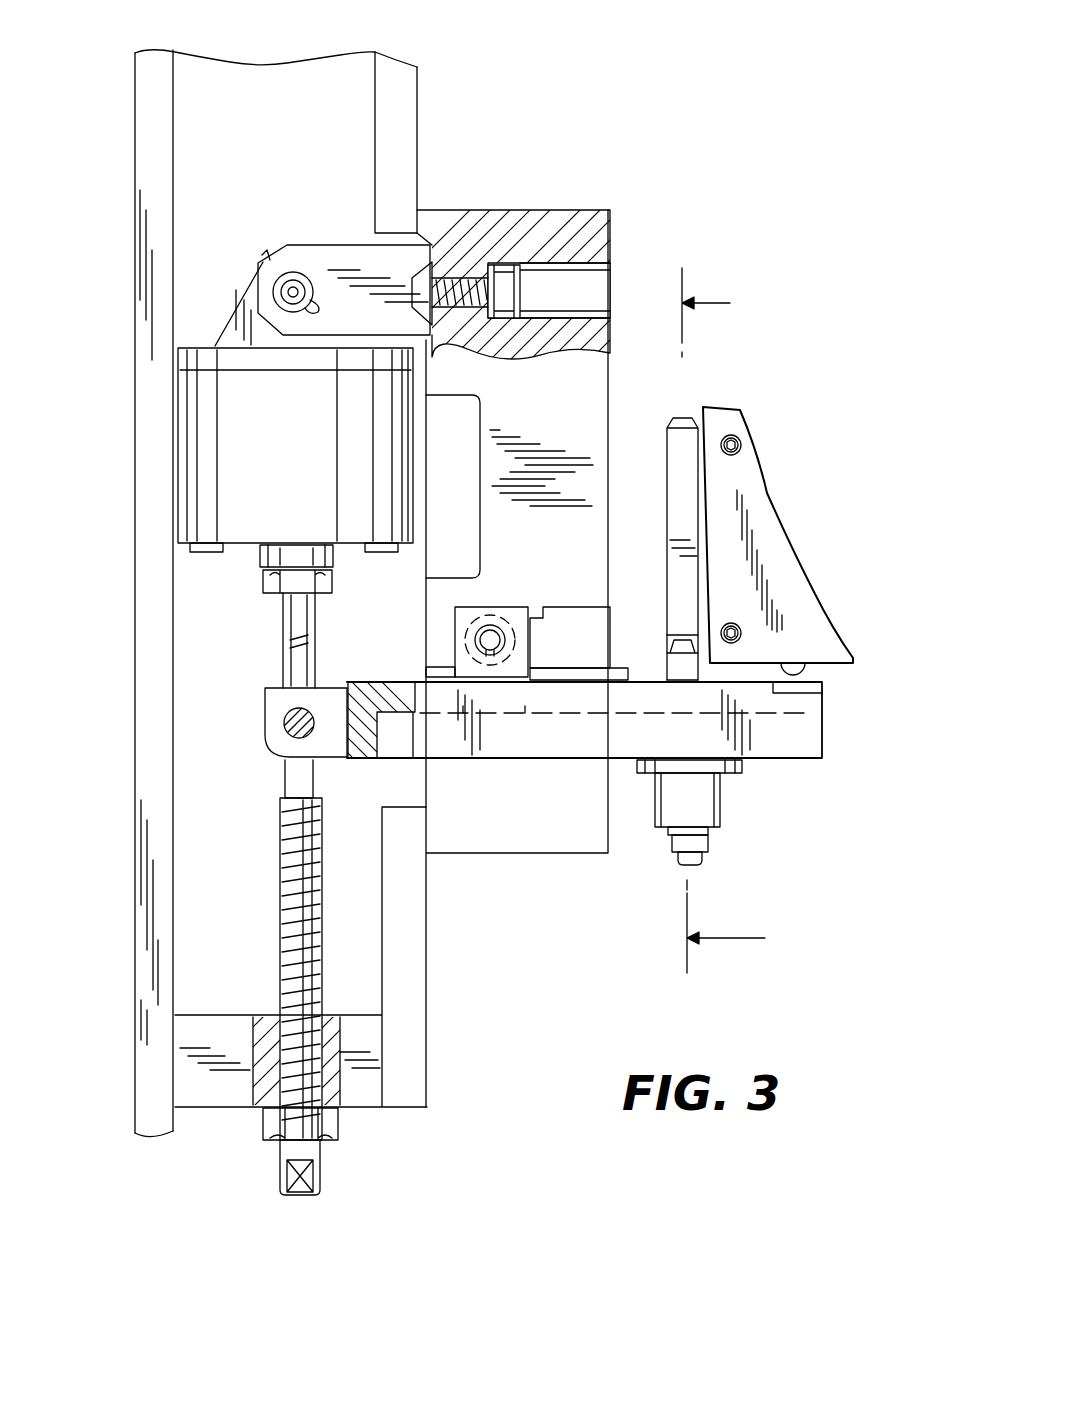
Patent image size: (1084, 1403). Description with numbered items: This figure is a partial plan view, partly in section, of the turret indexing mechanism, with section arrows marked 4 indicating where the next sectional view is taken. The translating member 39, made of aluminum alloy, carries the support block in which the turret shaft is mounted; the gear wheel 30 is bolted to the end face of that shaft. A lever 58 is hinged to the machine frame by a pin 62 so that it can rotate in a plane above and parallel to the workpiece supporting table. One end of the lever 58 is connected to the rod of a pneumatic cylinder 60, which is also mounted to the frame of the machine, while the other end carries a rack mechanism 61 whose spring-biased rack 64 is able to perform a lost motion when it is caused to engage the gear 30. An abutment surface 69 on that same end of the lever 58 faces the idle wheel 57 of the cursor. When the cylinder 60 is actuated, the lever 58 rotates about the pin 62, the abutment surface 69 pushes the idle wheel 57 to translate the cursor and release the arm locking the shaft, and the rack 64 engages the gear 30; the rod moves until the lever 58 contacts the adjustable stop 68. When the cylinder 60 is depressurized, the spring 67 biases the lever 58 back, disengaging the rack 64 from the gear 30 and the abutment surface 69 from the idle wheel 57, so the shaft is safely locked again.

The gear wheel 30 is at (672, 460).
The translating member 39 is at (777, 538).
The idle wheel 57 is at (800, 667).
The lever 58 is at (787, 750).
The pneumatic cylinder 60 is at (243, 545).
The rack mechanism 61 is at (714, 852).
The pin 62 is at (490, 637).
The rack 64 is at (677, 667).
The spring 67 is at (545, 668).
The adjustable stop 68 is at (283, 962).
The abutment surface 69 is at (822, 688).
The section line 4- 4 is at (723, 625).